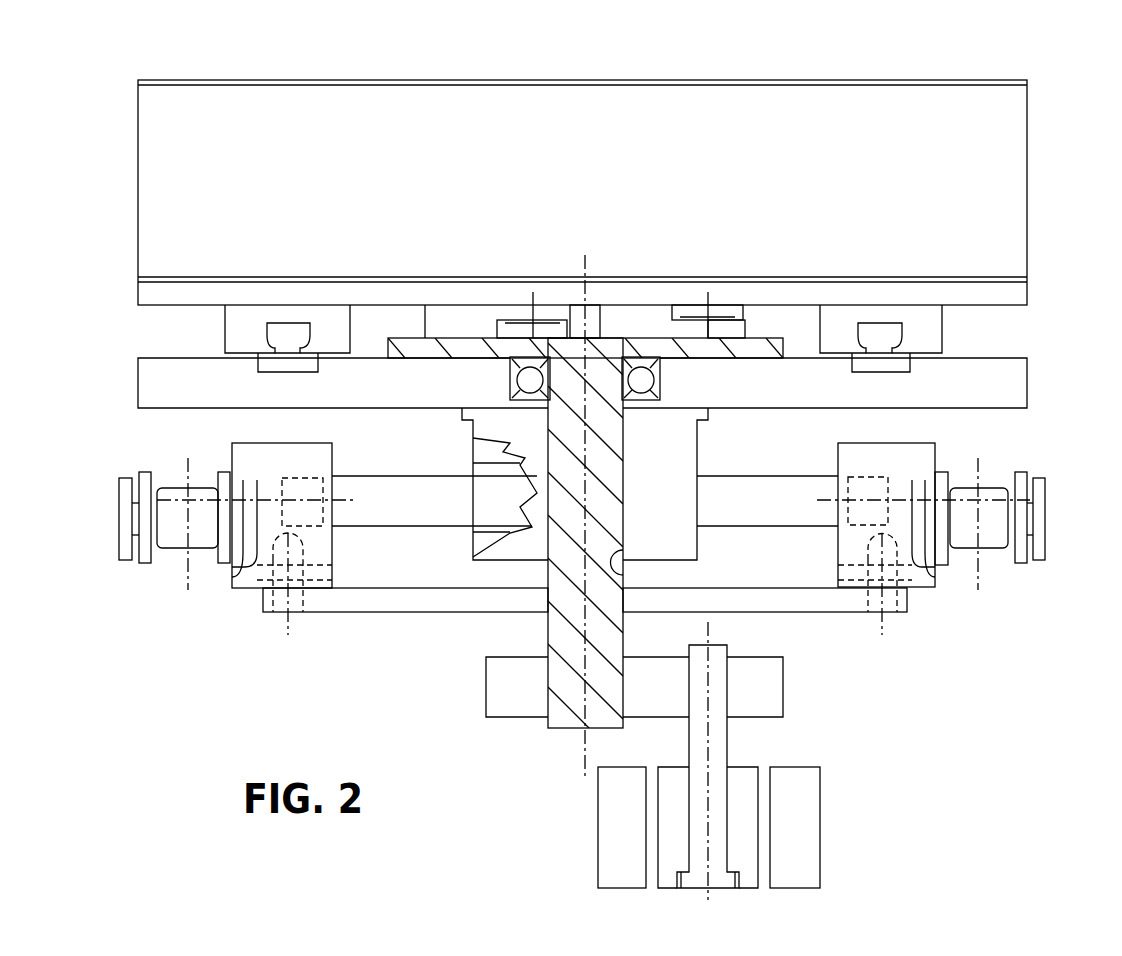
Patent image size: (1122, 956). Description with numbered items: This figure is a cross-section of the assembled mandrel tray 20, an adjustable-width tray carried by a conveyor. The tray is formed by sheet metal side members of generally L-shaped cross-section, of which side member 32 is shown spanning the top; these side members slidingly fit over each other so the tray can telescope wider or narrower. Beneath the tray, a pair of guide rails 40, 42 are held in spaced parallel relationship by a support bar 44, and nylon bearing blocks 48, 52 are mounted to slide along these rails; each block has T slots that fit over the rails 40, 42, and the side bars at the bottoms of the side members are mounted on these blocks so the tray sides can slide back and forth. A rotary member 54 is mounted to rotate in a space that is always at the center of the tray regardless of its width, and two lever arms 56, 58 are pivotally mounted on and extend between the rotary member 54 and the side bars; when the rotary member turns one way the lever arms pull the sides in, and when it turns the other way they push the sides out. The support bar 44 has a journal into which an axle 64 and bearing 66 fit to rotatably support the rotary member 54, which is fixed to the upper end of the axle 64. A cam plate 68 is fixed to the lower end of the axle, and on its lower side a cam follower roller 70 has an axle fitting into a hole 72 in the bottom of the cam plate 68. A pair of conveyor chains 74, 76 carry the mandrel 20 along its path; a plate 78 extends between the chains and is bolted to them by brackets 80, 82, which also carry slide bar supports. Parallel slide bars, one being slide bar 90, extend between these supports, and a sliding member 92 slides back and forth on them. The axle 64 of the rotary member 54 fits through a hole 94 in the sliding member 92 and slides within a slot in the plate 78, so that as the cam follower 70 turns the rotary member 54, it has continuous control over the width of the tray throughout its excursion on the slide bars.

The mandrel tray 20 is at (382, 62).
The side member 32 is at (1027, 210).
The guide rail 40 is at (273, 372).
The guide rail 42 is at (893, 372).
The support bar 44 is at (1028, 385).
The nylon bearing block 48 is at (228, 323).
The nylon bearing block 52 is at (945, 337).
The rotary member 54 is at (772, 338).
The lever arm 56 is at (510, 330).
The lever arm 58 is at (723, 318).
The axle 64 is at (548, 625).
The bearing 66 is at (657, 380).
The cam plate 68 is at (495, 718).
The cam follower roller 70 is at (818, 800).
The hole 72 is at (735, 657).
The conveyor chain 74 is at (208, 552).
The conveyor chain 76 is at (992, 558).
The plate 78 is at (335, 613).
The bracket 80 is at (250, 580).
The bracket 82 is at (922, 577).
The slide bar 90 is at (360, 476).
The sliding member 92 is at (697, 457).
The hole 94 is at (618, 567).